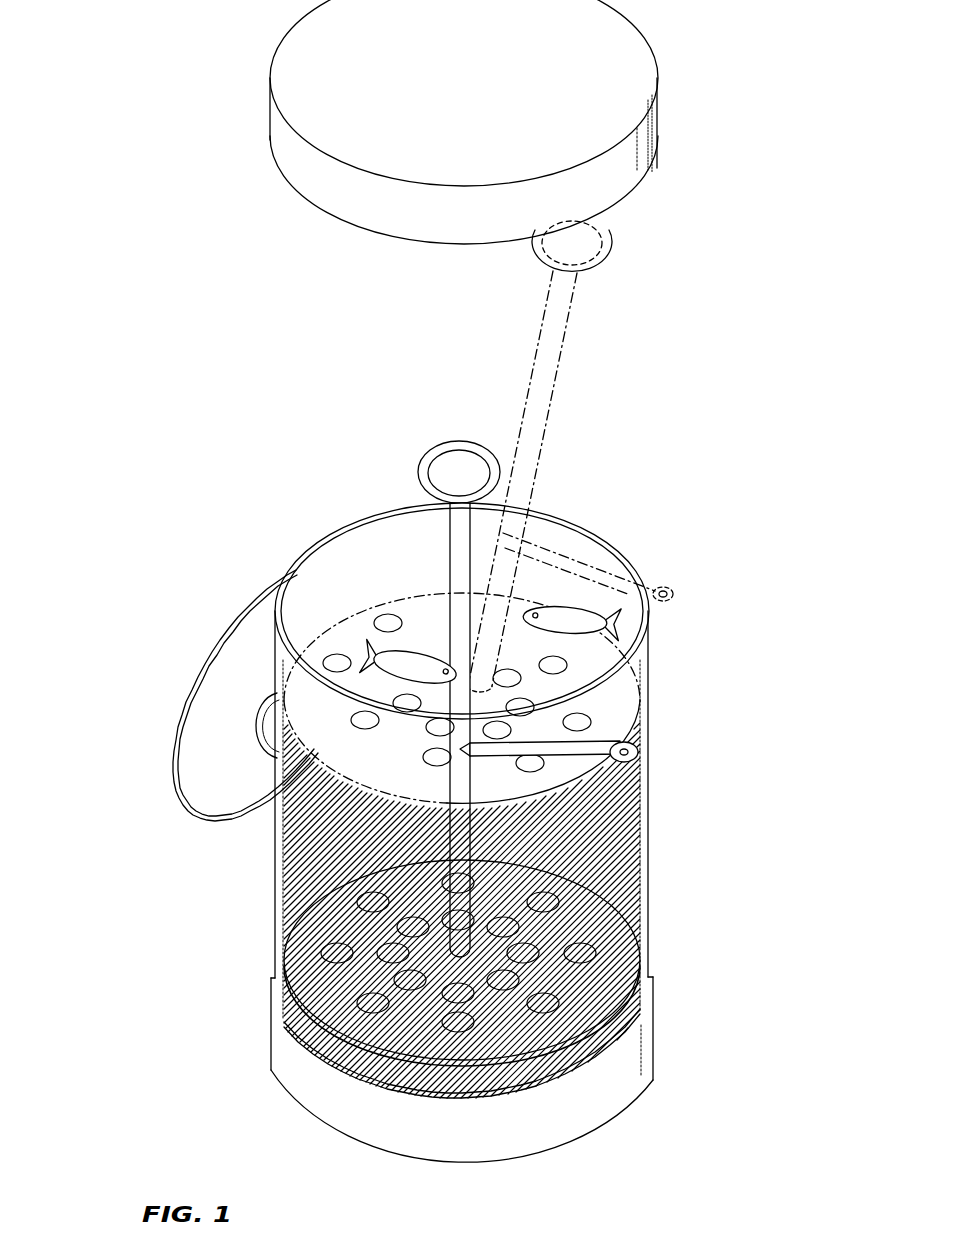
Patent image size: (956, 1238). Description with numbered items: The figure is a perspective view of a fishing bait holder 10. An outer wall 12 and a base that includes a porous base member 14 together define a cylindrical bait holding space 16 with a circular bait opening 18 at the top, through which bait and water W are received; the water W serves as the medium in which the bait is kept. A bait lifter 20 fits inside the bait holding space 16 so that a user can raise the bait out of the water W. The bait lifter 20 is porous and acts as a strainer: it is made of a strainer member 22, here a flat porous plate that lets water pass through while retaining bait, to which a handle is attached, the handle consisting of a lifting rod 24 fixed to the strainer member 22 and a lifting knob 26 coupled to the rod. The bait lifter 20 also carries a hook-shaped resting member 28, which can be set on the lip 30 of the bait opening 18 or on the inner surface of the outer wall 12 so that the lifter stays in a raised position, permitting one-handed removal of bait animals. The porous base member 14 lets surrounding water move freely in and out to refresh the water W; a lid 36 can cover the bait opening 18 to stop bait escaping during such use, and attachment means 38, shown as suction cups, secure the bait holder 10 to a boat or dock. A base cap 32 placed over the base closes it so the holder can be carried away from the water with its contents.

The fishing bait holder 10 is at (162, 162).
The outer wall 12 is at (498, 854).
The porous base member 14 is at (636, 1003).
The bait holding space 16 is at (640, 818).
The bait opening 18 is at (583, 543).
The bait lifter 20 is at (670, 748).
The strainer member 22 is at (598, 776).
The lifting rod 24 is at (546, 408).
The lifting knob 26 is at (612, 240).
The resting member 28 is at (634, 750).
The lip 30 is at (281, 583).
The base cap 32 is at (279, 1049).
The lid 36 is at (658, 80).
The attachment means 38 is at (248, 632).
The water w is at (325, 877).